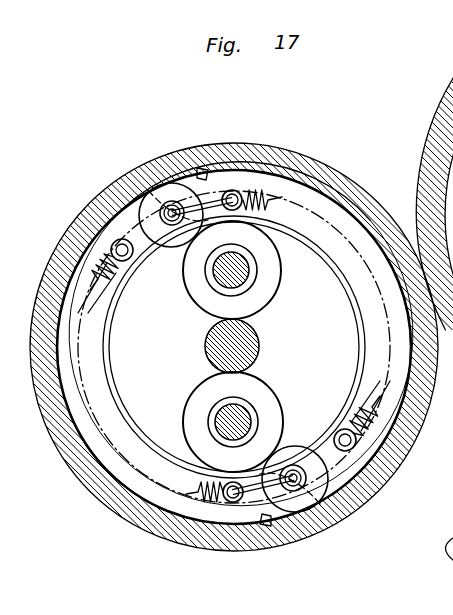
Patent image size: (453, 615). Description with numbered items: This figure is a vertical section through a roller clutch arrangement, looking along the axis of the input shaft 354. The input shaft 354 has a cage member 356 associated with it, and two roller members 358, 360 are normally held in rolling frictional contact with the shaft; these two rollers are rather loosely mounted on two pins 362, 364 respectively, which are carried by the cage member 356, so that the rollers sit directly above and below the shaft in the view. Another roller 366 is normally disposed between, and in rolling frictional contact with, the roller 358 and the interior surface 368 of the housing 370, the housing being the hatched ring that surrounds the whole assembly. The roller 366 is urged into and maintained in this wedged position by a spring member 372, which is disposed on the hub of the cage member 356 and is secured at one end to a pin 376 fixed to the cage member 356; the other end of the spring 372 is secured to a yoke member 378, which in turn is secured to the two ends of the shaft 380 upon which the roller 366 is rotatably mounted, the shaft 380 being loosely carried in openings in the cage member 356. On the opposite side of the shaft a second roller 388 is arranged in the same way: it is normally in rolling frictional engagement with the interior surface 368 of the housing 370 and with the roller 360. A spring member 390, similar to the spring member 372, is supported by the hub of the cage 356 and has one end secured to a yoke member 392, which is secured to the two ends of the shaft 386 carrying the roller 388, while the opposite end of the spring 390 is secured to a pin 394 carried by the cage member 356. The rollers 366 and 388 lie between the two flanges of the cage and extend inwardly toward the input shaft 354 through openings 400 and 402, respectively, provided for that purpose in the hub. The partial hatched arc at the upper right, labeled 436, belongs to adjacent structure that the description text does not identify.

The input shaft 354 is at (254, 340).
The cage member 356 is at (267, 237).
The roller member 358 is at (310, 188).
The roller member 360 is at (272, 390).
The pin 362 is at (218, 272).
The pin 364 is at (230, 413).
The roller 366 is at (131, 204).
The interior surface 368 is at (200, 170).
The housing 370 is at (233, 142).
The spring member 372 is at (338, 222).
The pin 376 is at (356, 446).
The yoke member 378 is at (175, 167).
The shaft 380 is at (102, 210).
The shaft 386 is at (315, 506).
The roller 388 is at (305, 468).
The spring member 390 is at (123, 462).
The yoke member 392 is at (253, 518).
The pin 394 is at (111, 245).
The opening 400 is at (152, 245).
The opening 402 is at (316, 447).
The adjacent housing band 436 is at (452, 90).